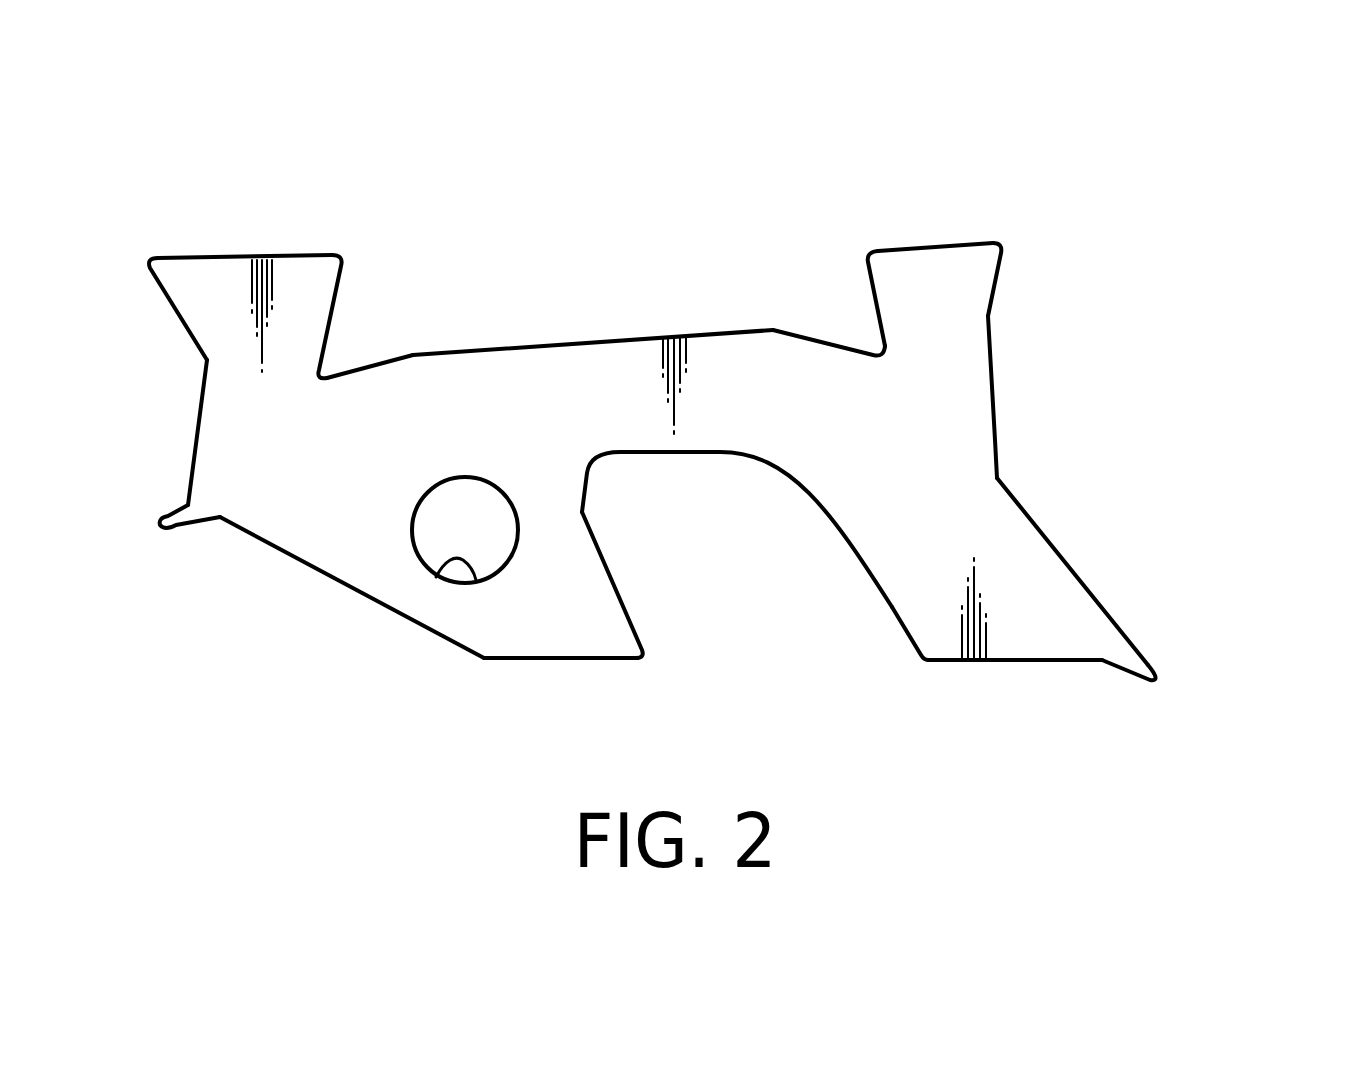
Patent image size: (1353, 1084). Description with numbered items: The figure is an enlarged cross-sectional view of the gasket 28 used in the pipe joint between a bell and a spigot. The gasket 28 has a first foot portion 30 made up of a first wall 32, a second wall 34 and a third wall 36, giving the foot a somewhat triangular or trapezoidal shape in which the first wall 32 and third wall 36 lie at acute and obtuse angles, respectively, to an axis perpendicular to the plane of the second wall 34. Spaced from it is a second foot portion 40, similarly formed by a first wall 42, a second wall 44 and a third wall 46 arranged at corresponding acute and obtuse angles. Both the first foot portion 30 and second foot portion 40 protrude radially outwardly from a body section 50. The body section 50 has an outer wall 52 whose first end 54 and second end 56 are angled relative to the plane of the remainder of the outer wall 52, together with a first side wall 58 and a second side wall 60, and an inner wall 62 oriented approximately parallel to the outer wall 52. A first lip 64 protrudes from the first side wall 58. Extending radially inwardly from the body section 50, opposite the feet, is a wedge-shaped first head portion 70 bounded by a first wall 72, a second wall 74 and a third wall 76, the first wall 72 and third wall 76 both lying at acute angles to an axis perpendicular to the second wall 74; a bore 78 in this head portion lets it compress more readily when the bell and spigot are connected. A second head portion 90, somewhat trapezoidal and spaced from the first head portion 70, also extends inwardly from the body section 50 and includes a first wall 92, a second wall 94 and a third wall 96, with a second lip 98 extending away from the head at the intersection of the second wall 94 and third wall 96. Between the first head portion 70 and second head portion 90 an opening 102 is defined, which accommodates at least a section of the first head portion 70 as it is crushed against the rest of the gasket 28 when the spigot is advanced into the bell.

The gasket 28 is at (500, 675).
The first foot portion 30 is at (187, 275).
The first wall 32 is at (177, 317).
The second wall 34 is at (231, 258).
The third wall 36 is at (342, 280).
The second foot portion 40 is at (938, 277).
The first wall 42 is at (867, 277).
The second wall 44 is at (915, 243).
The third wall 46 is at (997, 285).
The body section 50 is at (710, 363).
The outer wall 52 is at (595, 338).
The first end 54 is at (350, 373).
The second end 56 is at (833, 342).
The first side wall 58 is at (195, 453).
The second side wall 60 is at (993, 400).
The inner wall 62 is at (680, 453).
The first lip 64 is at (176, 520).
The first head portion 70 is at (610, 638).
The first wall 72 is at (337, 580).
The second wall 74 is at (602, 660).
The third wall 76 is at (610, 563).
The bore 78 is at (438, 577).
The second head portion 90 is at (962, 533).
The first wall 92 is at (892, 607).
The second wall 94 is at (1002, 663).
The third wall 96 is at (1073, 575).
The second lip 98 is at (1148, 668).
The opening 102 is at (787, 613).